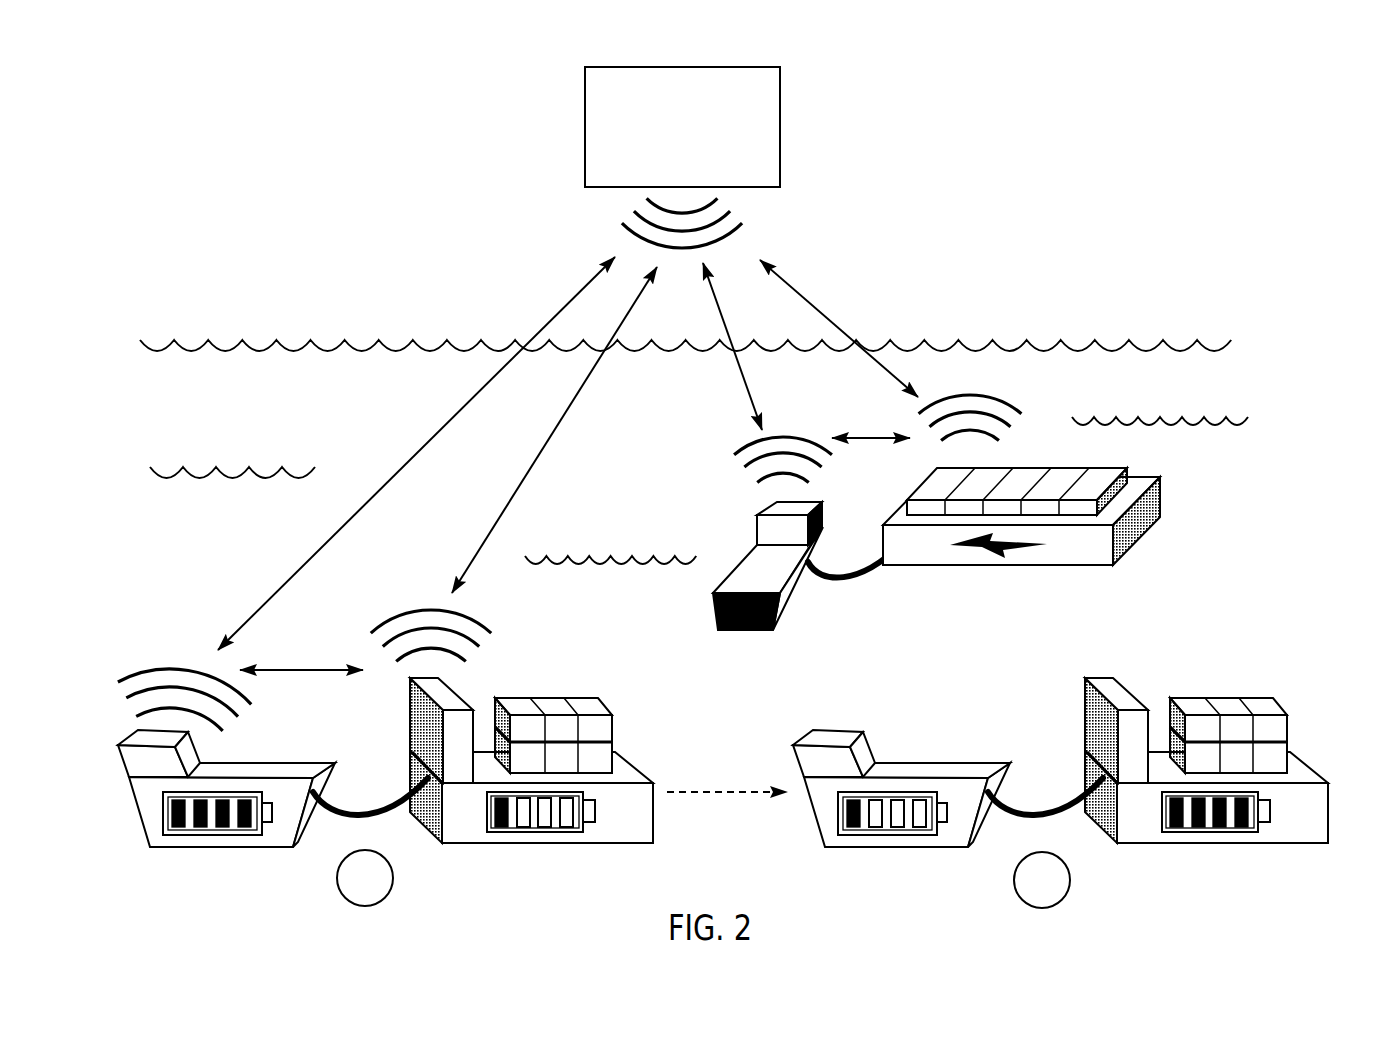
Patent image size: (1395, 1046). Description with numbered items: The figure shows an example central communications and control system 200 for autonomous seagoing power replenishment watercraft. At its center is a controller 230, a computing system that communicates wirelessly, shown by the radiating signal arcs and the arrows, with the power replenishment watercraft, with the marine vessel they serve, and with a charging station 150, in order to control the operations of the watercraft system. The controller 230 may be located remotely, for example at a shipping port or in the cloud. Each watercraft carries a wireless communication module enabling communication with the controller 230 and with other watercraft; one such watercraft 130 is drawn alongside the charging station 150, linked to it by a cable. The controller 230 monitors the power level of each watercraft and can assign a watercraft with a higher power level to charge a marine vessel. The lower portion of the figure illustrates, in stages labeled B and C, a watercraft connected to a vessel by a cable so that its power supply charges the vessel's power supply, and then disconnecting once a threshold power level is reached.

The central communications and control system 200 is at (1084, 197).
The controller 230 is at (780, 103).
The watercraft 130 is at (800, 593).
The charging station 150 is at (1163, 507).